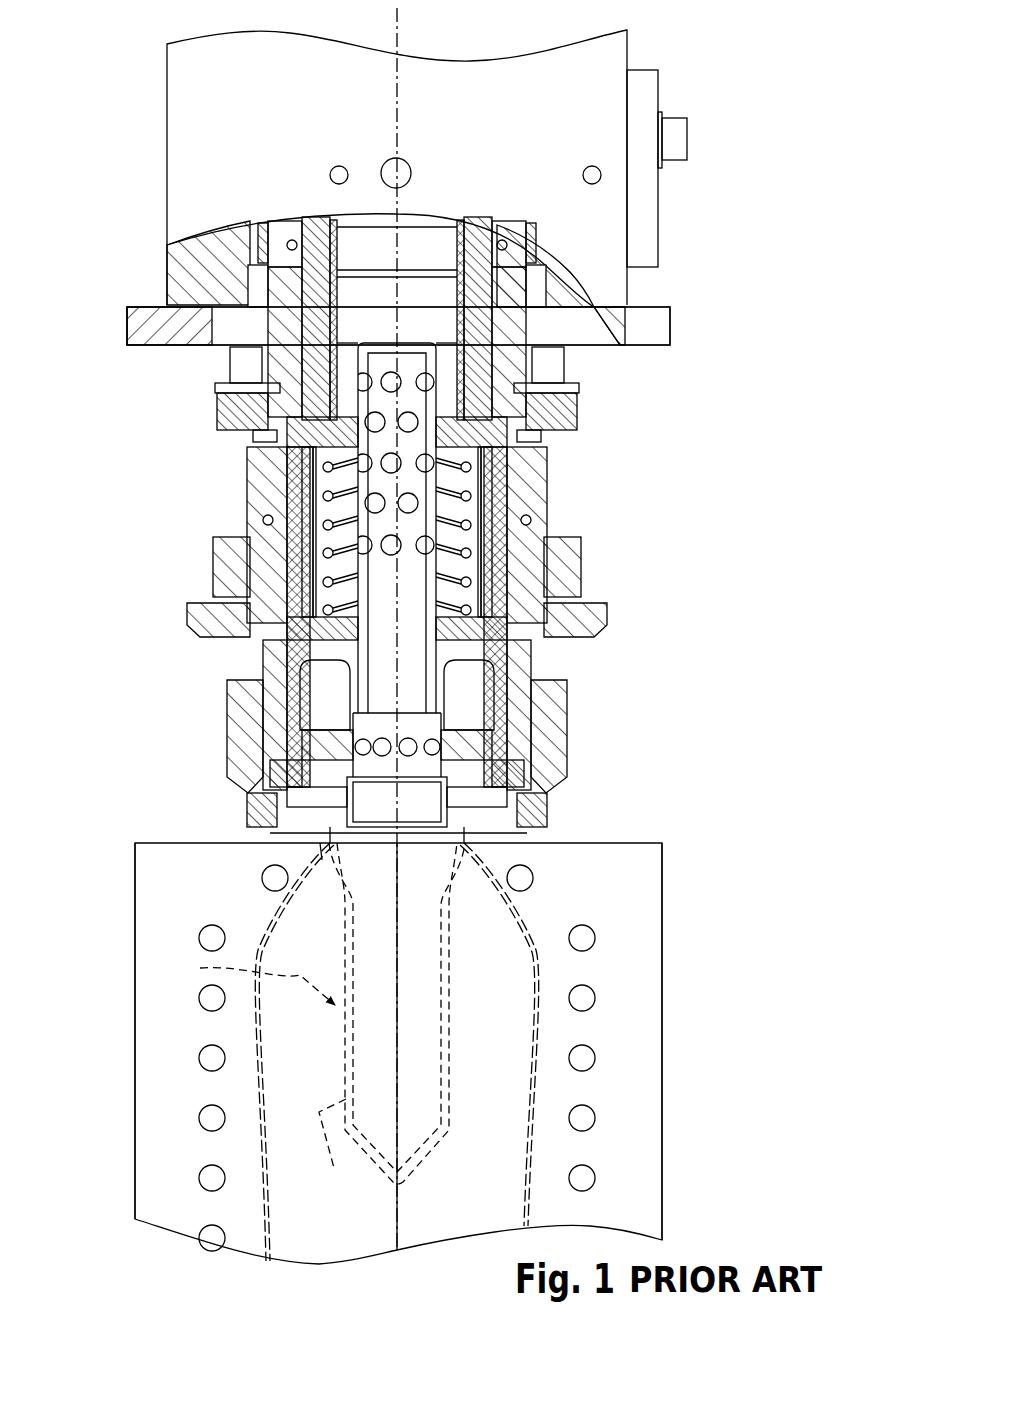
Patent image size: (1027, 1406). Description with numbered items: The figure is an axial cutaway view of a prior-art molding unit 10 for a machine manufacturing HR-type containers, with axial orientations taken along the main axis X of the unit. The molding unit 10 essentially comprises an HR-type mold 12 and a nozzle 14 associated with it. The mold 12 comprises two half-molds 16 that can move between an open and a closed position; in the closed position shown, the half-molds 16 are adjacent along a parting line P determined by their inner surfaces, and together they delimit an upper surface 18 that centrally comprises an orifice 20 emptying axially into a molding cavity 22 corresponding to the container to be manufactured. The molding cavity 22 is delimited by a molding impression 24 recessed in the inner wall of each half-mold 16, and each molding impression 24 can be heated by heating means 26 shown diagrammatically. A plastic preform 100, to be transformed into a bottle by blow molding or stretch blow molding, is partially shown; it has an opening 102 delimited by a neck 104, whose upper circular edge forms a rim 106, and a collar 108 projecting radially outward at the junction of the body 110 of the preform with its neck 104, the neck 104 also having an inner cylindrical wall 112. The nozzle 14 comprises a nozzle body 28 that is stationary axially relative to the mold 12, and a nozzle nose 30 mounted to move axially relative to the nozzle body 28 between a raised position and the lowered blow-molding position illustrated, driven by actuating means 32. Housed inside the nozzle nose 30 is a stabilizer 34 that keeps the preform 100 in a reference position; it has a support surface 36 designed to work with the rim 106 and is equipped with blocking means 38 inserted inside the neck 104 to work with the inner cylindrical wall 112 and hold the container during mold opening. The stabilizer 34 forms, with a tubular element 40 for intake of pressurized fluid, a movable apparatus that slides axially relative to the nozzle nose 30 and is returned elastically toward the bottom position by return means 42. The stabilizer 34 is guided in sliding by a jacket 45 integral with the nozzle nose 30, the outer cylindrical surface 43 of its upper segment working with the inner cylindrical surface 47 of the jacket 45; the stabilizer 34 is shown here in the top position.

The molding unit 10 is at (716, 352).
The mold 12 is at (672, 862).
The nozzle 14 is at (207, 204).
The half-molds 16 is at (173, 1018).
The upper surface 18 is at (175, 838).
The orifice 20 is at (420, 858).
The molding cavity 22 is at (477, 1150).
The molding impression 24 is at (533, 1027).
The heating means 26 is at (583, 995).
The nozzle body 28 is at (515, 375).
The nozzle nose 30 is at (277, 687).
The actuating means 32 is at (548, 103).
The stabilizer 34 is at (232, 580).
The support surface 36 is at (287, 813).
The blocking means 38 is at (475, 867).
The tubular element 40 is at (433, 523).
The return means 42 is at (330, 525).
The outer cylindrical surface 43 is at (493, 540).
The jacket 45 is at (505, 663).
The inner cylindrical surface 47 is at (477, 580).
The preform 100 is at (246, 979).
The opening 102 is at (365, 800).
The neck 104 is at (510, 763).
The rim 106 is at (462, 770).
The collar 108 is at (282, 840).
The body 110 is at (335, 1146).
The inner cylindrical wall 112 is at (325, 865).
The main axis X is at (398, 35).
The parting line P is at (400, 1223).